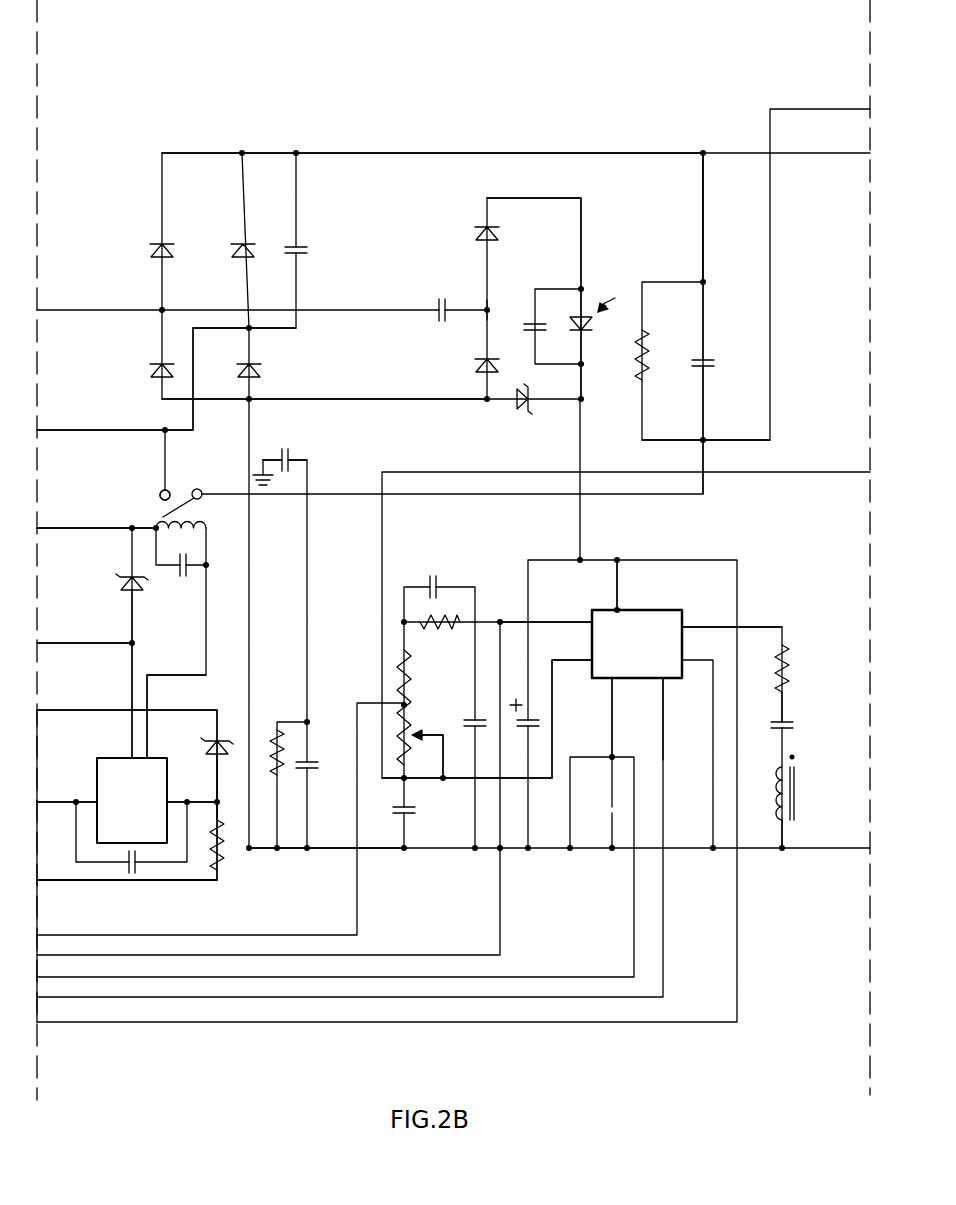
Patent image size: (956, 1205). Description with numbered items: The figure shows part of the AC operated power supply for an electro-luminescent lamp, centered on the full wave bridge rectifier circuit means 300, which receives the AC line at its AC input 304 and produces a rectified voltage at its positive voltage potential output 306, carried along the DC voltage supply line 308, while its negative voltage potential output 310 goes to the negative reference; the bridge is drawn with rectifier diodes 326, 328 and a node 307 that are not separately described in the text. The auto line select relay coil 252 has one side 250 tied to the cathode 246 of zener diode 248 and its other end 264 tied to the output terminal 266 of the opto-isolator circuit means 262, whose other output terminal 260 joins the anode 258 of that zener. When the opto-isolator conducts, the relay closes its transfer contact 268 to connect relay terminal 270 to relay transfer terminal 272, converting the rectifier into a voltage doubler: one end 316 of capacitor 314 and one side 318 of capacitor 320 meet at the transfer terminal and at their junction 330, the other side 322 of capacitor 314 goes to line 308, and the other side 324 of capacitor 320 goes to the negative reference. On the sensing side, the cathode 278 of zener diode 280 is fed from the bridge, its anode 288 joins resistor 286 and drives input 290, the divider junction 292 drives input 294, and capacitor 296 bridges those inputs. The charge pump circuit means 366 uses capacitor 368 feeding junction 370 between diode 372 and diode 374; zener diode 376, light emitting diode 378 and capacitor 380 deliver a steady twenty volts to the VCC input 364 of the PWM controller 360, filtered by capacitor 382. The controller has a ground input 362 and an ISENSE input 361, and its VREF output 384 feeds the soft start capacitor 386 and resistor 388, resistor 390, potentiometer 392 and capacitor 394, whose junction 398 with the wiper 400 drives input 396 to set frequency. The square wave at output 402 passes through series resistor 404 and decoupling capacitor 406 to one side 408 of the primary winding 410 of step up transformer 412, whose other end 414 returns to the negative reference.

The full wave bridge rectifier circuit means 300 is at (185, 86).
The AC input 304 is at (160, 308).
The positive voltage potential output 306 is at (175, 153).
The node 307 is at (253, 331).
The DC voltage supply line 308 is at (622, 153).
The negative voltage potential output 310 is at (253, 402).
The capacitor 314 is at (710, 362).
The one end of capacitor 314 316 is at (705, 422).
The other side of capacitor 314 322 is at (705, 215).
The diode 326 is at (240, 243).
The diode 328 is at (258, 373).
The junction of capacitors 314 and 320 330 is at (705, 443).
The charge pump circuit means 366 is at (431, 241).
The capacitor 368 is at (437, 306).
The junction 370 is at (488, 307).
The diode 372 is at (482, 230).
The diode 374 is at (480, 370).
The zener diode 376 is at (520, 405).
The light emitting diode 378 is at (600, 243).
The capacitor 380 is at (530, 335).
The transfer contact 268 is at (139, 379).
The relay terminal 270 is at (160, 492).
The relay transfer terminal 272 is at (210, 447).
The one side of relay coil 250 is at (155, 525).
The relay coil 252 is at (185, 520).
The other end of relay coil 264 is at (210, 540).
The cathode of zener diode 246 is at (130, 580).
The zener diode 248 is at (135, 592).
The anode of zener diode 258 is at (134, 643).
The output terminal of opto-isolator 260 is at (128, 752).
The opto-isolator circuit means 262 is at (125, 755).
The other output terminal of opto-isolator 266 is at (148, 758).
The cathode of zener diode 280 278 is at (222, 745).
The zener diode 280 is at (246, 740).
The resistor 286 is at (222, 850).
The anode of zener diode 280 288 is at (220, 805).
The input of opto-isolator 290 is at (177, 800).
The junction of resistors 276 and 284 292 is at (52, 805).
The input of opto-isolator 294 is at (78, 800).
The capacitor 296 is at (136, 866).
The one side of capacitor 320 318 is at (308, 722).
The capacitor 320 is at (312, 770).
The other side of capacitor 320 324 is at (310, 850).
The PWM controller 360 is at (643, 608).
The ISENSE input 361 is at (613, 683).
The ground reference potential input 362 is at (662, 683).
The VCC input 364 is at (615, 608).
The capacitor 382 is at (537, 725).
The VREF output 384 is at (590, 625).
The capacitor 386 is at (441, 585).
The resistor 388 is at (462, 620).
The resistor 390 is at (400, 665).
The potentiometer 392 is at (409, 705).
The capacitor 394 is at (406, 816).
The input 396 is at (584, 661).
The junction 398 is at (406, 780).
The wiper 400 is at (440, 735).
The output 402 is at (700, 625).
The series resistor 404 is at (787, 662).
The decoupling capacitor 406 is at (786, 720).
The one side of primary winding 408 is at (790, 756).
The primary winding 410 is at (780, 785).
The step up transformer 412 is at (800, 786).
The other end of primary winding 414 is at (790, 836).